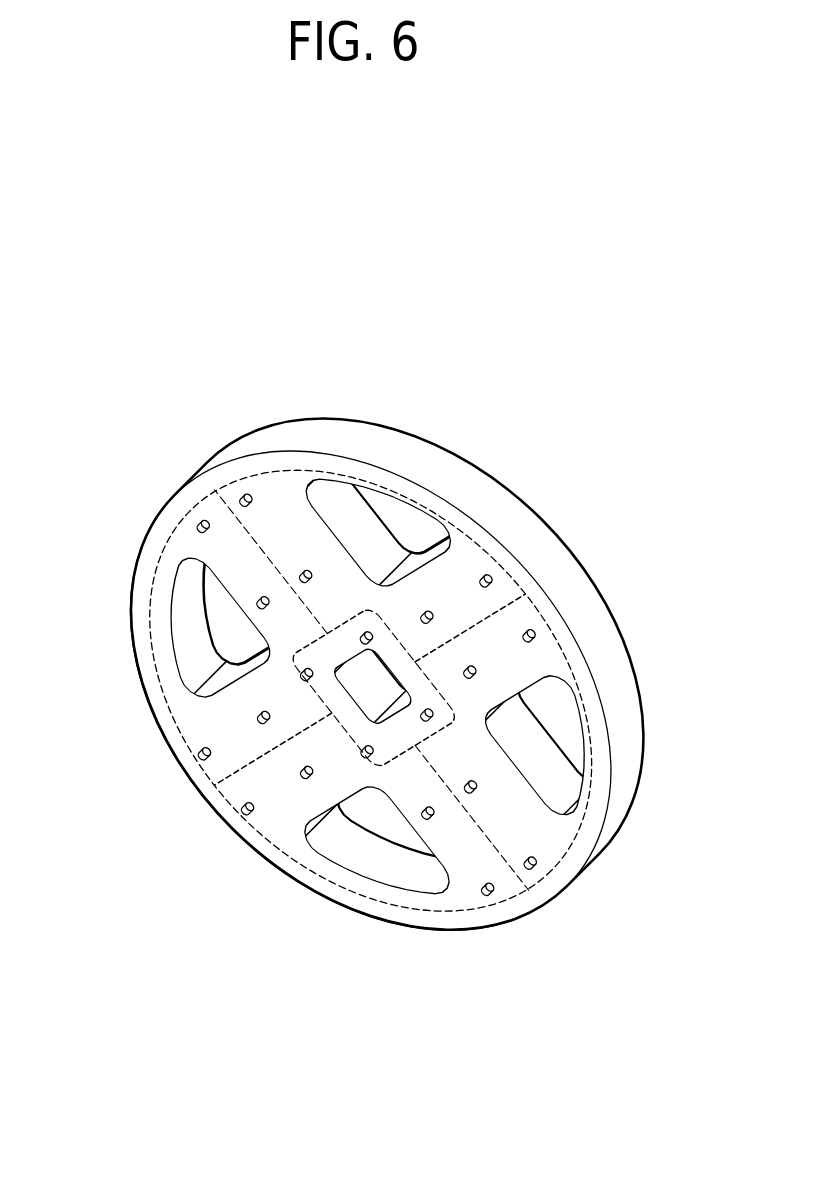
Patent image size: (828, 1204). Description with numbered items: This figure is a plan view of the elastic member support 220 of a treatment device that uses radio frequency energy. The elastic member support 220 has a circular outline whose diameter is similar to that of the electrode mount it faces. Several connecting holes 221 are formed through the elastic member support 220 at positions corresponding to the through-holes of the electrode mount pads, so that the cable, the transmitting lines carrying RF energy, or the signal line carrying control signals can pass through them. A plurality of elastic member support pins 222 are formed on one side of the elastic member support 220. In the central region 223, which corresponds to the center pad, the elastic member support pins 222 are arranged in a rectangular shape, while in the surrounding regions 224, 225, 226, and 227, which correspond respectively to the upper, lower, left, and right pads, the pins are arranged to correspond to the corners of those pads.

The elastic member support 220 is at (574, 416).
The connecting holes 221 is at (198, 628).
The elastic member support pins 222 is at (200, 522).
The region corresponding to the center pad 223 is at (389, 670).
The region corresponding to the upper pad 224 is at (370, 690).
The region corresponding to the lower pad 225 is at (387, 673).
The region corresponding to the left pad 226 is at (213, 608).
The region corresponding to the right pad 227 is at (574, 729).